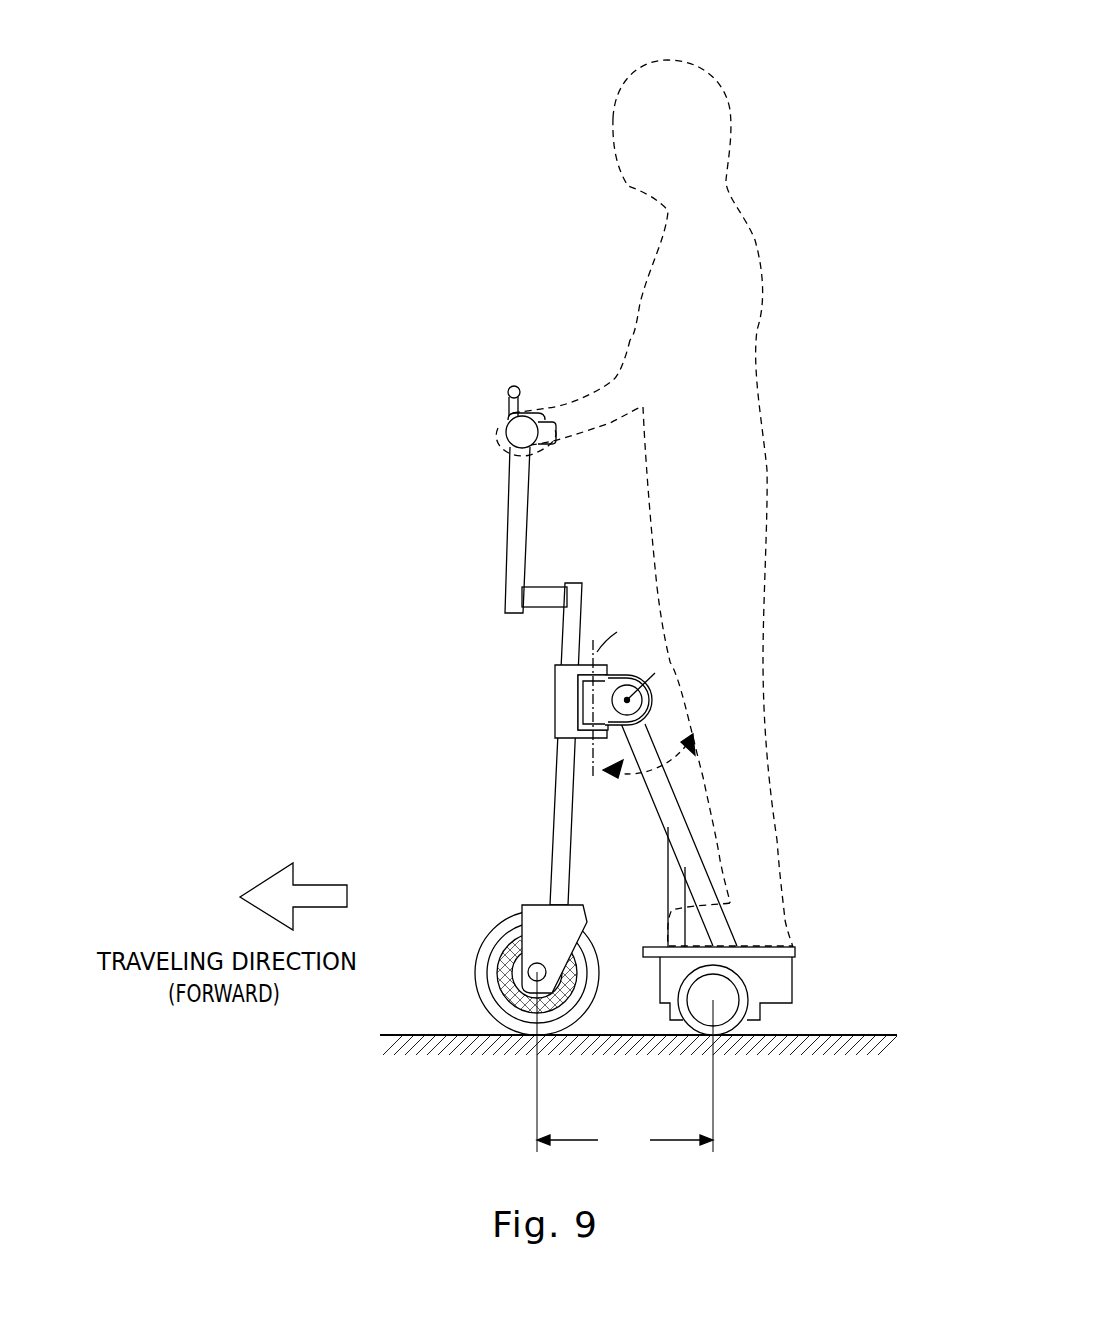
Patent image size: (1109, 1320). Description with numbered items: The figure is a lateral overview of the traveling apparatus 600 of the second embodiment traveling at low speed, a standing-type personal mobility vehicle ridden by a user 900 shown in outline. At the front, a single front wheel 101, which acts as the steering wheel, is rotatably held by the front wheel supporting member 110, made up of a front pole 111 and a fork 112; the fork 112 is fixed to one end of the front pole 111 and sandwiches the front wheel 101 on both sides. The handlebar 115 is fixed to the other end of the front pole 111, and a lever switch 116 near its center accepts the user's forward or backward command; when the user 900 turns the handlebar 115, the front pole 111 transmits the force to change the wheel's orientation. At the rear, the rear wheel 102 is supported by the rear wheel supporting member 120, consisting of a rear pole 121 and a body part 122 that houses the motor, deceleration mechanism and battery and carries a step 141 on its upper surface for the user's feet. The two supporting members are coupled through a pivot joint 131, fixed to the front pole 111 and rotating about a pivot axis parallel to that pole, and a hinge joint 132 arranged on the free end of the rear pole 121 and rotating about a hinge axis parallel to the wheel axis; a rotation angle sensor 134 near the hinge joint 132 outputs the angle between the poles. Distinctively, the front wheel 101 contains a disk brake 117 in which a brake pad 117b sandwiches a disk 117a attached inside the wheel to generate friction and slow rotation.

The user 900 is at (760, 82).
The traveling apparatus 600 is at (360, 390).
The front wheel supporting member 110 is at (447, 812).
The front pole 111 is at (560, 842).
The fork 112 is at (540, 912).
The handlebar 115 is at (505, 420).
The lever switch 116 is at (518, 386).
The disk brake 117 is at (503, 942).
The disk 117a is at (547, 1007).
The brake pad 117b is at (572, 993).
The front wheel 101 is at (492, 1005).
The rear wheel 102 is at (732, 1008).
The rear wheel supporting member 120 is at (888, 895).
The rear pole 121 is at (703, 888).
The body part 122 is at (773, 972).
The pivot joint 131 is at (568, 688).
The hinge joint 132 is at (602, 703).
The rotation angle sensor 134 is at (653, 700).
The step 141 is at (653, 947).